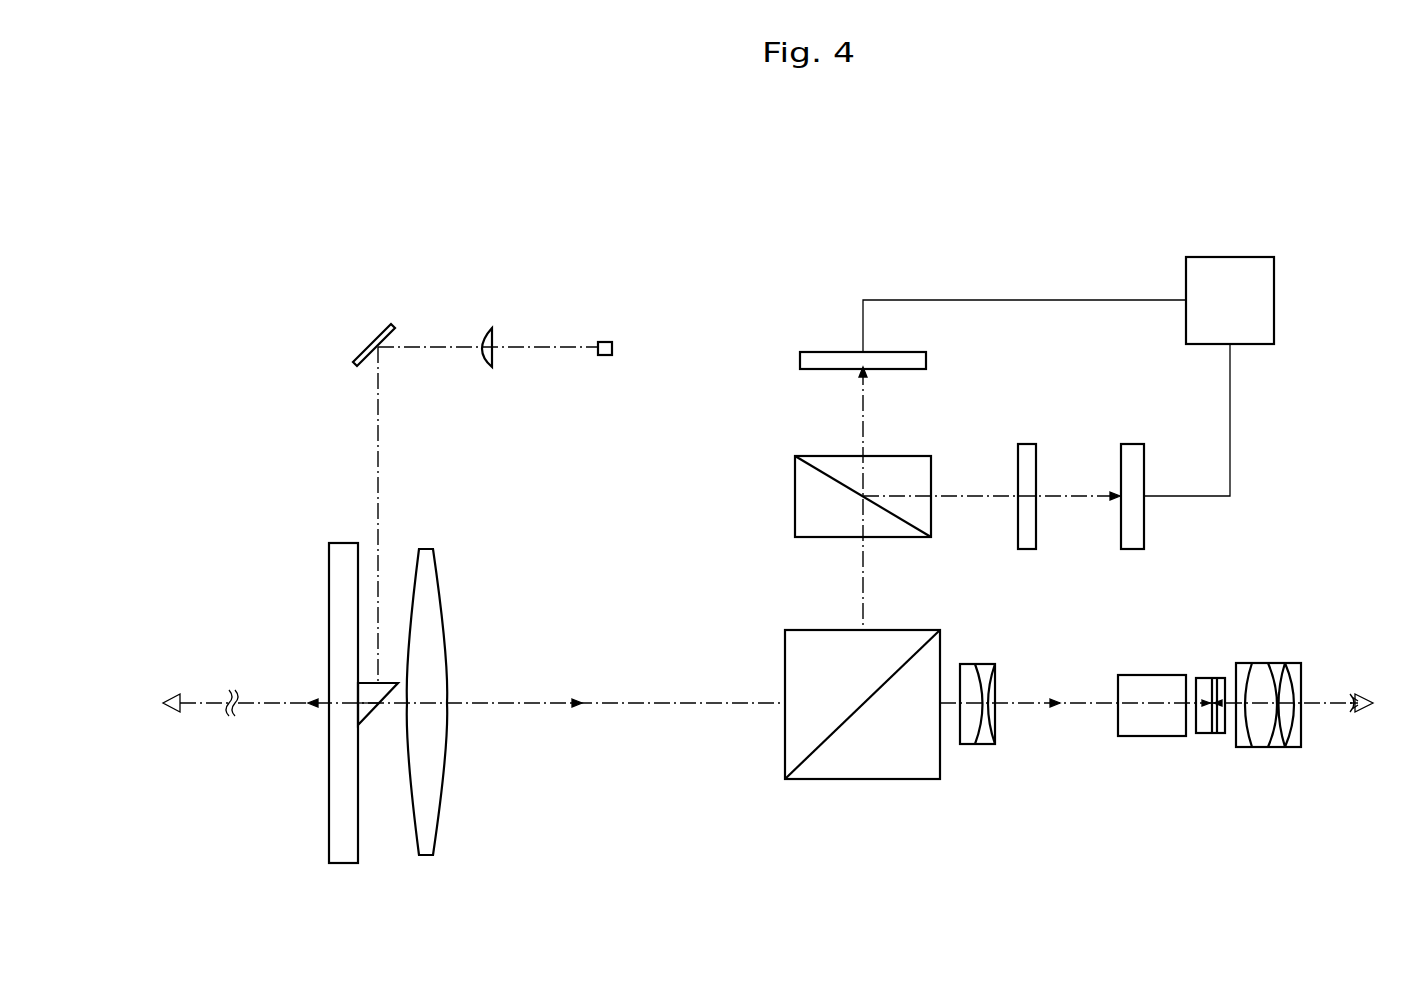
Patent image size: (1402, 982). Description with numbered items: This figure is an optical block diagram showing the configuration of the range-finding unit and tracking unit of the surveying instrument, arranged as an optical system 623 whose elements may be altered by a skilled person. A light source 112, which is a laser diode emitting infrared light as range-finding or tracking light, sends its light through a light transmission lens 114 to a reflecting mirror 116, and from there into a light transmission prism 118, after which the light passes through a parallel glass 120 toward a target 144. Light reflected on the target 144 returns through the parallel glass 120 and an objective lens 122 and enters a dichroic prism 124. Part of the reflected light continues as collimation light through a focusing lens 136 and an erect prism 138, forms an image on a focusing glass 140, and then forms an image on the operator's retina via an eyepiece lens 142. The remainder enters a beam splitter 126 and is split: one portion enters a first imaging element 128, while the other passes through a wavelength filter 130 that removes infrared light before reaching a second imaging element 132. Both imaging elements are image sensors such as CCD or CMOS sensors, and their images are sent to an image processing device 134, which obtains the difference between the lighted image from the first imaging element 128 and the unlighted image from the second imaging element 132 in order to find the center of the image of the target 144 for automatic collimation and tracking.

The light source 112 is at (604, 340).
The light transmission lens 114 is at (485, 328).
The reflecting mirror 116 is at (378, 322).
The light transmission prism 118 is at (370, 718).
The parallel glass 120 is at (329, 562).
The objective lens 122 is at (446, 814).
The dichroic prism 124 is at (800, 630).
The beam splitter 126 is at (812, 456).
The first imaging element 128 is at (812, 352).
The wavelength filter 130 is at (1027, 444).
The second imaging element 132 is at (1132, 444).
The image processing device 134 is at (1240, 257).
The focusing lens 136 is at (985, 664).
The erect prism 138 is at (1162, 675).
The focusing glass 140 is at (1205, 735).
The eyepiece lens 142 is at (1260, 746).
The target 144 is at (170, 693).
The optical system 623 is at (1046, 238).